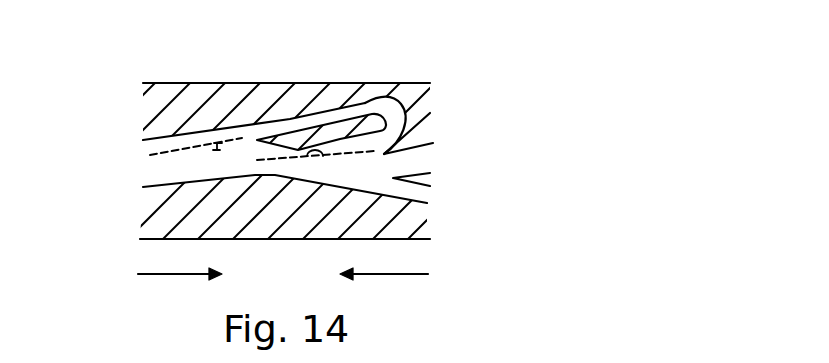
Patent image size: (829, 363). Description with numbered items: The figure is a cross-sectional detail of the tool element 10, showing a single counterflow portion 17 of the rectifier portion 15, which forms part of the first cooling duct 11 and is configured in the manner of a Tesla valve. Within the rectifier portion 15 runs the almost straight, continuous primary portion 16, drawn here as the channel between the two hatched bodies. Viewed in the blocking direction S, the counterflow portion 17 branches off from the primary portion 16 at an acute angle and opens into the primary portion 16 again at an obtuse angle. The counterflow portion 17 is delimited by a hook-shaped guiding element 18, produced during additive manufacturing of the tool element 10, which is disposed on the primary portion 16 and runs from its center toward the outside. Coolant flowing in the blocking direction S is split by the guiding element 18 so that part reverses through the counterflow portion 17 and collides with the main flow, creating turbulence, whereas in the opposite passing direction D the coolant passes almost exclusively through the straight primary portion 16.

The tool element 10 is at (421, 101).
The first cooling duct 11 is at (326, 102).
The rectifier portion 15 is at (249, 113).
The primary portion 16 is at (123, 157).
The counterflow portion 17 is at (358, 104).
The guiding element 18 is at (325, 124).
The blocking direction S is at (180, 287).
The passing direction D is at (384, 287).